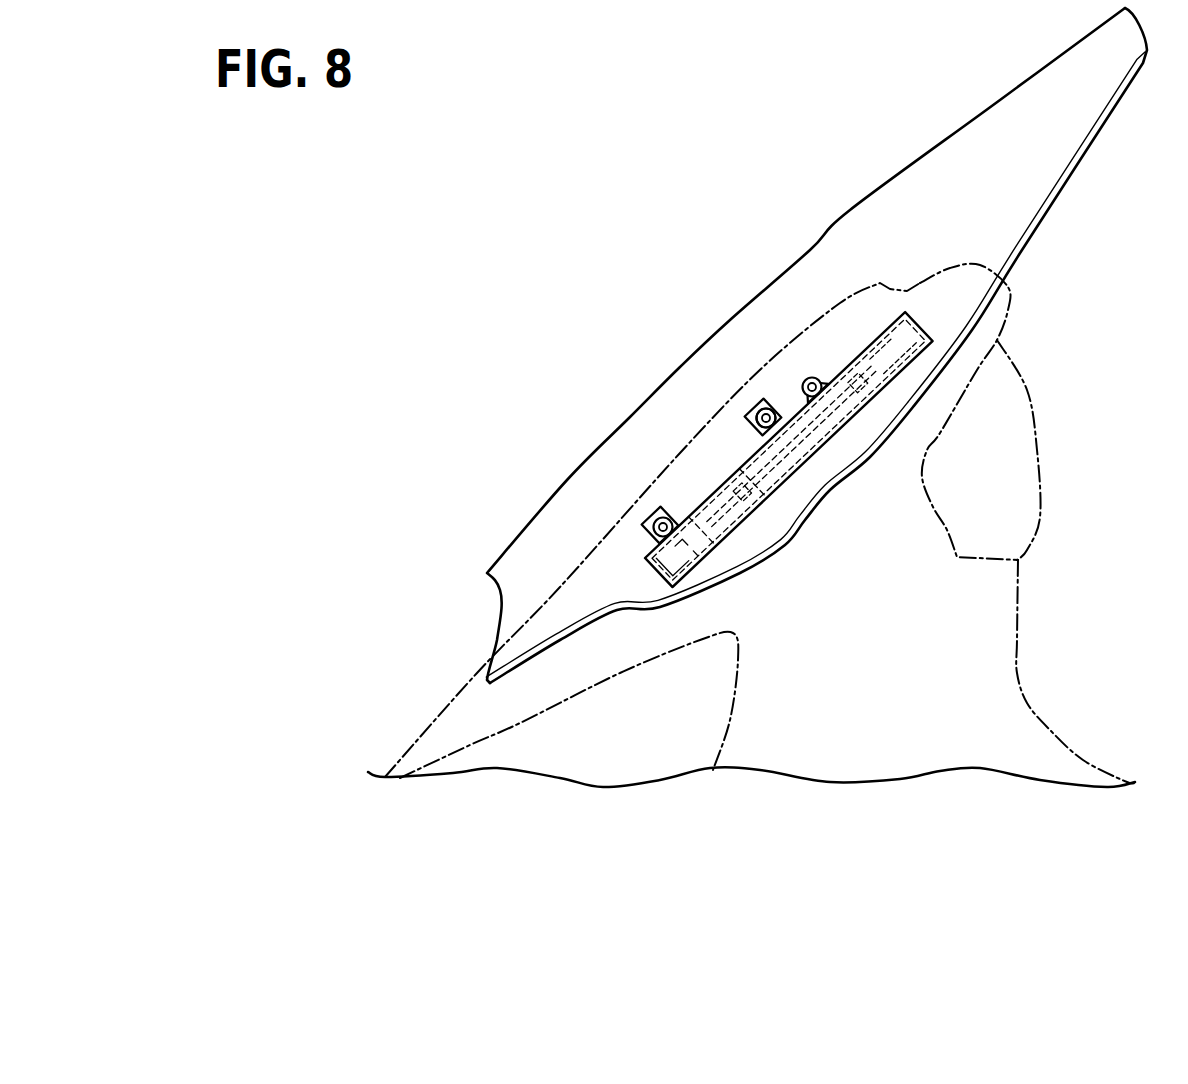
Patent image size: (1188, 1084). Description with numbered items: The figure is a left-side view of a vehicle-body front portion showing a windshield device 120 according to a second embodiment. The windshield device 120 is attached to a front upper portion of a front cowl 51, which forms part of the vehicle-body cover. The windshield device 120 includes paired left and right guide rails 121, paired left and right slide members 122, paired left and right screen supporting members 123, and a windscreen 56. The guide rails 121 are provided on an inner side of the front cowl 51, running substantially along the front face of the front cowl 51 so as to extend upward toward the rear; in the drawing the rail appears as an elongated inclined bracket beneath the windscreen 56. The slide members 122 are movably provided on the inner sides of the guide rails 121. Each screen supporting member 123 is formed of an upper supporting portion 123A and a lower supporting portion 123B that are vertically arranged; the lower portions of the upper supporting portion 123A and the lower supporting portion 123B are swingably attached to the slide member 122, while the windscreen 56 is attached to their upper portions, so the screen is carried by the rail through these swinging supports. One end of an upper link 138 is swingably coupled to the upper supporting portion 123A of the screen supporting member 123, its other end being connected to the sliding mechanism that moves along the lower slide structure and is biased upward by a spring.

The front cowl 51 is at (430, 715).
The windscreen 56 is at (929, 160).
The windshield device 120 is at (645, 365).
The guide rail 121 is at (885, 388).
The slide member 122 is at (715, 493).
The screen supporting member 123 is at (753, 400).
The upper supporting portion 123A is at (755, 402).
The lower supporting portion 123B is at (643, 520).
The upper link 138 is at (787, 395).